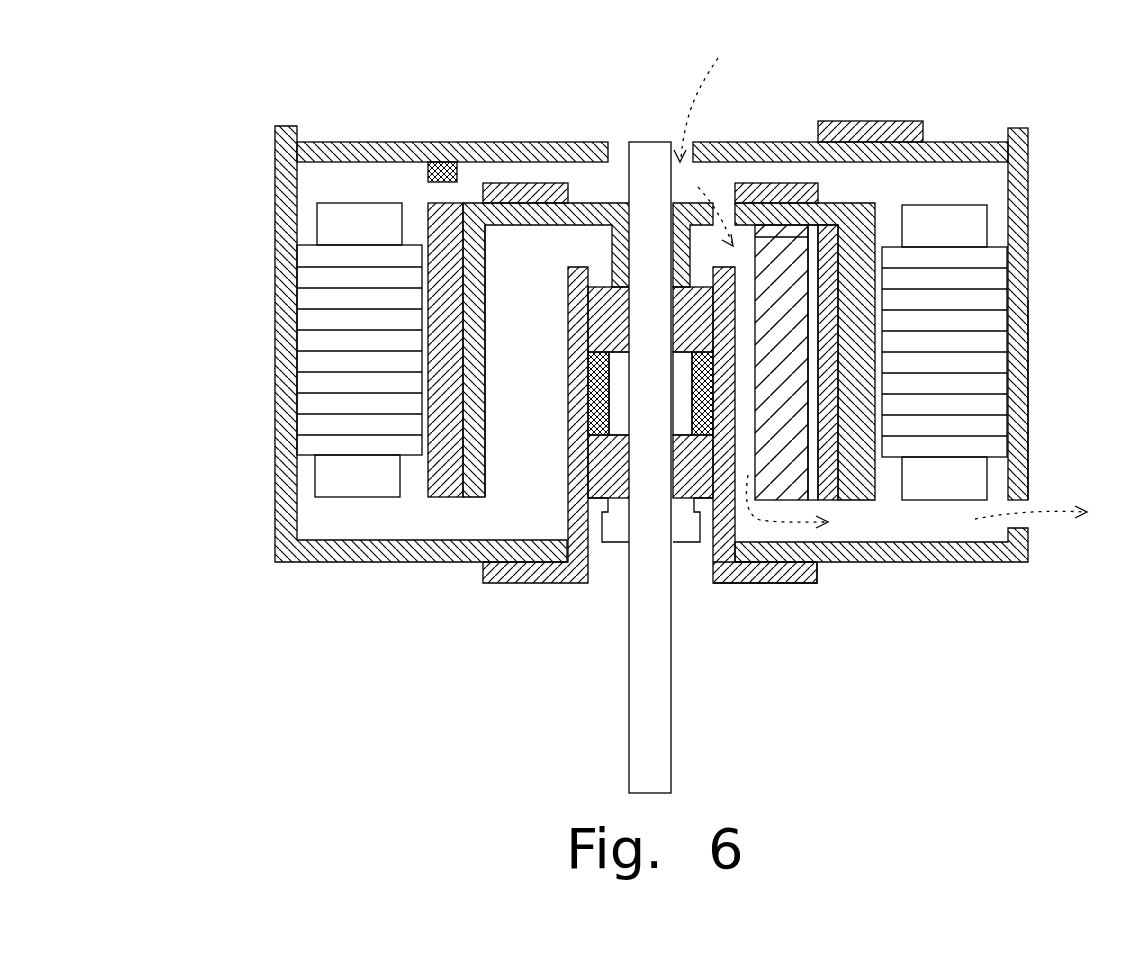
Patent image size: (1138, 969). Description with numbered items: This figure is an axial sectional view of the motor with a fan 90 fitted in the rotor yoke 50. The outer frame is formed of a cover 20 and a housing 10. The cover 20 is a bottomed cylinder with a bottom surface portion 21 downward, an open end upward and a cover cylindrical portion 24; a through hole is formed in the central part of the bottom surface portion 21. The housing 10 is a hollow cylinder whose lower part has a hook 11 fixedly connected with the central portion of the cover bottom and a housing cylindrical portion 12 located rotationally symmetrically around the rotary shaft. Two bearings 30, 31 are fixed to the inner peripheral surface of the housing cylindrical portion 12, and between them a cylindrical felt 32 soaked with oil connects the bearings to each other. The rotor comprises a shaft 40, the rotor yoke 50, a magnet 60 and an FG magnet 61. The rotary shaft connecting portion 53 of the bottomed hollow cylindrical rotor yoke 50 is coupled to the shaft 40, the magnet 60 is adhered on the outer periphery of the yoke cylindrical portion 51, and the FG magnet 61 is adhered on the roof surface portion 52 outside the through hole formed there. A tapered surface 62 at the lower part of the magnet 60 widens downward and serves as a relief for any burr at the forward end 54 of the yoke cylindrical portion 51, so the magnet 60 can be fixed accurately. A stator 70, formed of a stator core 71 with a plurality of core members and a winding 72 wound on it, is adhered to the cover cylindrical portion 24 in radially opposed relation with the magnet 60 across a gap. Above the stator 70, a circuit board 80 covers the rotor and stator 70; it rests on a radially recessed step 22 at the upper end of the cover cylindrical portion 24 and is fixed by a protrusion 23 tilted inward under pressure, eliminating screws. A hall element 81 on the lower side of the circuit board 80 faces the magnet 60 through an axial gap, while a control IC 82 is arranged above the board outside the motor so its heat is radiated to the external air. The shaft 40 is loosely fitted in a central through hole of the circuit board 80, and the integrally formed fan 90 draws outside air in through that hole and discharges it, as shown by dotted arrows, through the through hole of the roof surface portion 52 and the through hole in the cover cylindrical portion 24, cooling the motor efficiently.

The housing 10 is at (781, 514).
The hook 11 is at (768, 578).
The housing cylindrical portion 12 is at (723, 452).
The cover 20 is at (915, 406).
The bottom surface portion 21 is at (903, 570).
The recessed step 22 is at (1028, 184).
The protrusion 23 is at (1028, 142).
The cover cylindrical portion 24 is at (1028, 345).
The bearing 30 is at (572, 328).
The bearing 31 is at (597, 490).
The felt 32 is at (593, 398).
The shaft 40 is at (643, 160).
The rotor yoke 50 is at (567, 364).
The yoke cylindrical portion 51 is at (480, 343).
The roof surface portion 52 is at (620, 278).
The rotary shaft connecting portion 53 is at (557, 182).
The forward end 54 is at (467, 495).
The magnet 60 is at (586, 364).
The FG magnet 61 is at (783, 192).
The tapered surface 62 is at (455, 492).
The stator 70 is at (596, 438).
The stator core 71 is at (340, 423).
The winding 72 is at (350, 483).
The circuit board 80 is at (600, 299).
The hall element 81 is at (445, 162).
The control IC 82 is at (882, 135).
The fan 90 is at (783, 255).